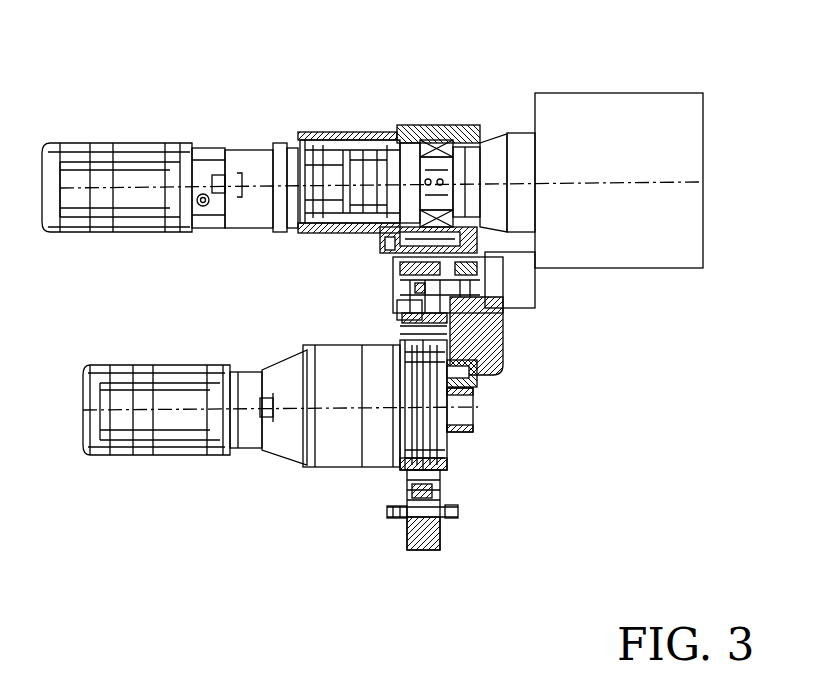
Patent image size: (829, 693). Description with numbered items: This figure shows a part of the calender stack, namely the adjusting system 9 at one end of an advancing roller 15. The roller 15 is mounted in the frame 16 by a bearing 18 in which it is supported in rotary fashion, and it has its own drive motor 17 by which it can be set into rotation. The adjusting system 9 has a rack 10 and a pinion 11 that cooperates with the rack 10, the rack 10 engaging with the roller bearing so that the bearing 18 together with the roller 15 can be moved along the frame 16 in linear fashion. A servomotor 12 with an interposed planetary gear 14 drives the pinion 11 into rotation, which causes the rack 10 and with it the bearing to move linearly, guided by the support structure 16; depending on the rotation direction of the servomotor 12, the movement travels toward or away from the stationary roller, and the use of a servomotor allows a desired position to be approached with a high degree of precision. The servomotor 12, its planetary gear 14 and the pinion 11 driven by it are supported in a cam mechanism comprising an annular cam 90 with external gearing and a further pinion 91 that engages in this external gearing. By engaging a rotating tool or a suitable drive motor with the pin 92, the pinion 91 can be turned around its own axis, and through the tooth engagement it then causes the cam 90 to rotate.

The adjusting system 9 is at (488, 88).
The rack 10 is at (480, 381).
The pinion 11 is at (473, 423).
The servomotor 12 is at (162, 453).
The planetary gear 14 is at (325, 468).
The roller 15 is at (620, 92).
The frame 16 is at (396, 308).
The drive motor 17 is at (181, 142).
The bearing 18 is at (433, 138).
The annular cam 90 is at (445, 462).
The pinion 91 is at (440, 497).
The pin 92 is at (452, 520).